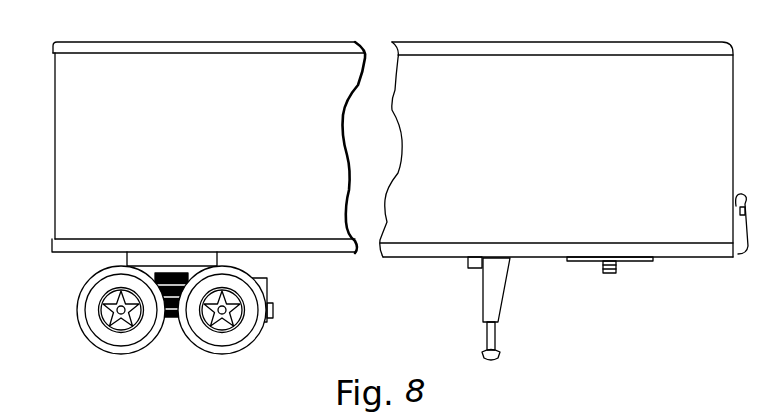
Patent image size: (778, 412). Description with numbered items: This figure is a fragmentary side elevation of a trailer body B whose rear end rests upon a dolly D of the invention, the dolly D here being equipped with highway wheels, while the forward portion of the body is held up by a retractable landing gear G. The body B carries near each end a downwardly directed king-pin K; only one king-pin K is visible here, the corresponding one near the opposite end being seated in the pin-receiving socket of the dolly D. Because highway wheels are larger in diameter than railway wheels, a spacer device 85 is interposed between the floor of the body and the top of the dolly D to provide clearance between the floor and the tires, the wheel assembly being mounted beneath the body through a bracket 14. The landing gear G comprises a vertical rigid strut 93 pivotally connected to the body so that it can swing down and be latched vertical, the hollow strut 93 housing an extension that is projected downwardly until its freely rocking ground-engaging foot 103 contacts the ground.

The trailer body B is at (603, 77).
The dolly D is at (76, 284).
The axle bracket 14 is at (266, 327).
The spacer device 85 is at (168, 258).
The landing gear G is at (515, 313).
The vertical rigid strut 93 is at (495, 288).
The ground-engaging foot 103 is at (502, 353).
The king-pin K is at (626, 272).